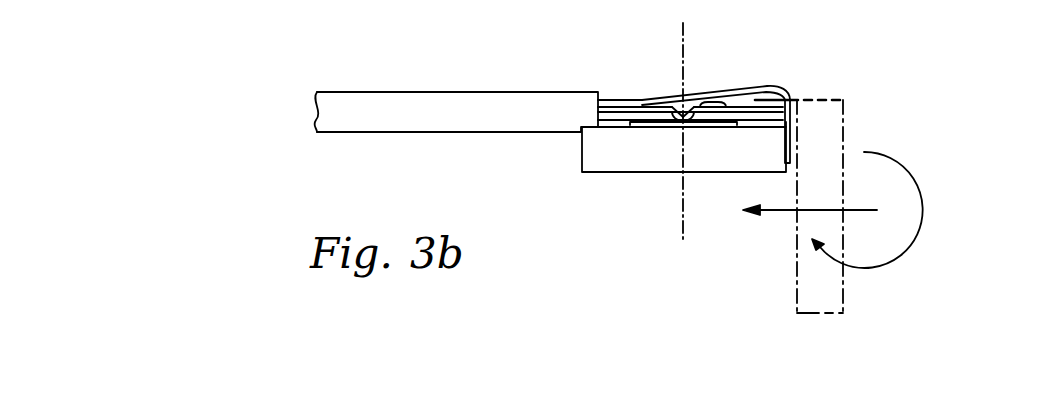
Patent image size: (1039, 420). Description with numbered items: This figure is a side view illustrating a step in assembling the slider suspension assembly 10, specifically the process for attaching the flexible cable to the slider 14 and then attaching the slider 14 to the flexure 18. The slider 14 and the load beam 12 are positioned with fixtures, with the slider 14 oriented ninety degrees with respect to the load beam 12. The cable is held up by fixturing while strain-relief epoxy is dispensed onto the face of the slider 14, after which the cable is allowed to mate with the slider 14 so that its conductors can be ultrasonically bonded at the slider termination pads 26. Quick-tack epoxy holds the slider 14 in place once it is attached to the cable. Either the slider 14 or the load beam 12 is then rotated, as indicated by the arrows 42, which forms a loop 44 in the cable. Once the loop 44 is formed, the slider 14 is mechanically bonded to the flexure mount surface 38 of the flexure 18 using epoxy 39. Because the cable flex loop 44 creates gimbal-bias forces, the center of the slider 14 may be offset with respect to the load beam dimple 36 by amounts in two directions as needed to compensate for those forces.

The slider suspension assembly 10 is at (258, 84).
The load beam 12 is at (396, 112).
The slider 14 is at (600, 157).
The flexure 18 is at (618, 107).
The slider termination pads 26 is at (841, 100).
The load beam dimple 36 is at (673, 107).
The flexure mount surface 38 is at (663, 123).
The epoxy 39 is at (737, 123).
The arrows 42 is at (774, 211).
The loop 44 is at (780, 74).